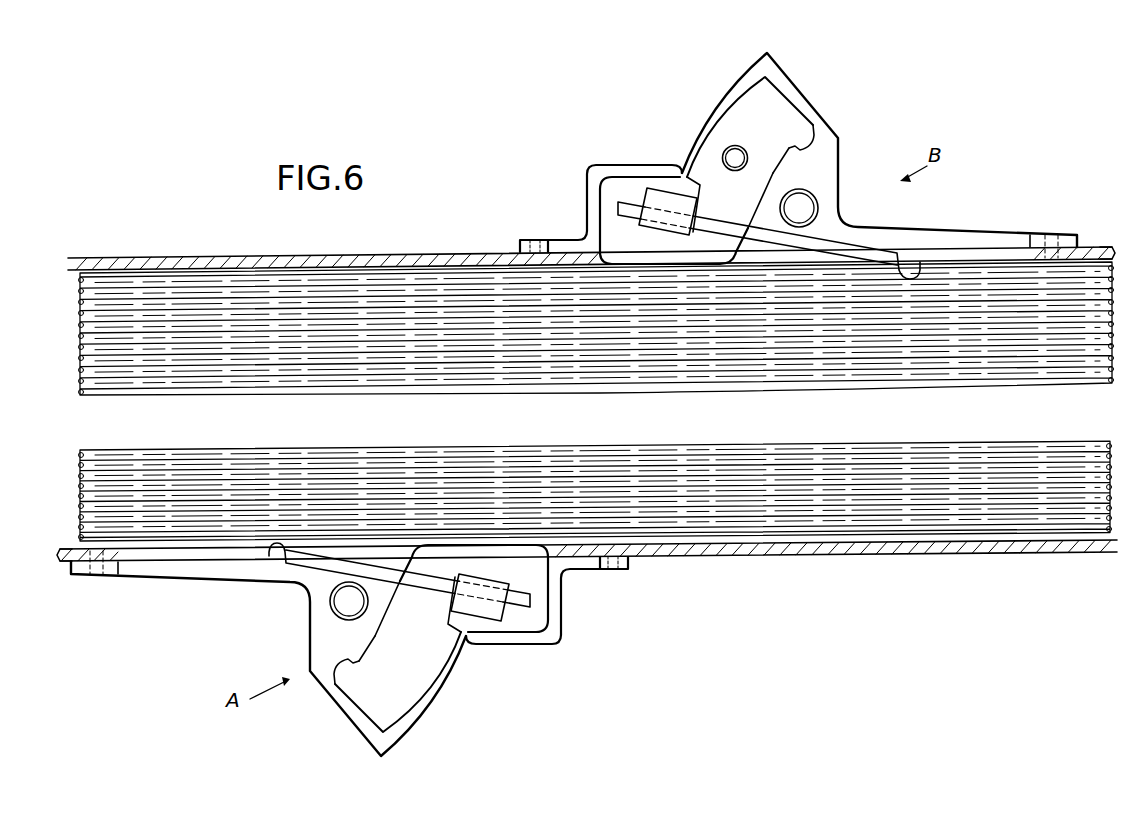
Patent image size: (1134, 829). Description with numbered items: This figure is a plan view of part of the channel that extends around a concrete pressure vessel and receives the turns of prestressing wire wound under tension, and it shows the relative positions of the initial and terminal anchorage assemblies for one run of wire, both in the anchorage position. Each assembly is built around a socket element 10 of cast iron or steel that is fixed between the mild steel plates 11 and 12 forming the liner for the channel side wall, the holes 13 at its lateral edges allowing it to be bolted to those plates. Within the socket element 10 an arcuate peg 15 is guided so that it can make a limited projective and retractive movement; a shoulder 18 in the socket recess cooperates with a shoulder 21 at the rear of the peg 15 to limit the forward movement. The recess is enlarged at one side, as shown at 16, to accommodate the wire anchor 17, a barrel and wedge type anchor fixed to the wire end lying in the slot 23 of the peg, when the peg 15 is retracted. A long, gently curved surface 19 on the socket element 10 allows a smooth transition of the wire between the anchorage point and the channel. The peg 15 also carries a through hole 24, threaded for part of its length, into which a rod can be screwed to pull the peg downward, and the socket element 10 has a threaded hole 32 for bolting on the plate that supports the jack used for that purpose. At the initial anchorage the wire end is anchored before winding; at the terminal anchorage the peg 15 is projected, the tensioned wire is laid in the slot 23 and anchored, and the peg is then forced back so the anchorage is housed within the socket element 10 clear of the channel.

The socket element 10 is at (812, 85).
The plate 11 is at (440, 256).
The plate 12 is at (1099, 247).
The holes 13 is at (1056, 235).
The peg 15 is at (795, 122).
The enlargement or extension of the recess 16 is at (622, 185).
The wire anchor 17 is at (655, 228).
The shoulder 18 is at (773, 173).
The curved surface 19 is at (920, 277).
The shoulder 21 is at (800, 165).
The slot 23 is at (718, 227).
The hole 24 is at (737, 147).
The threaded hole 32 is at (818, 206).